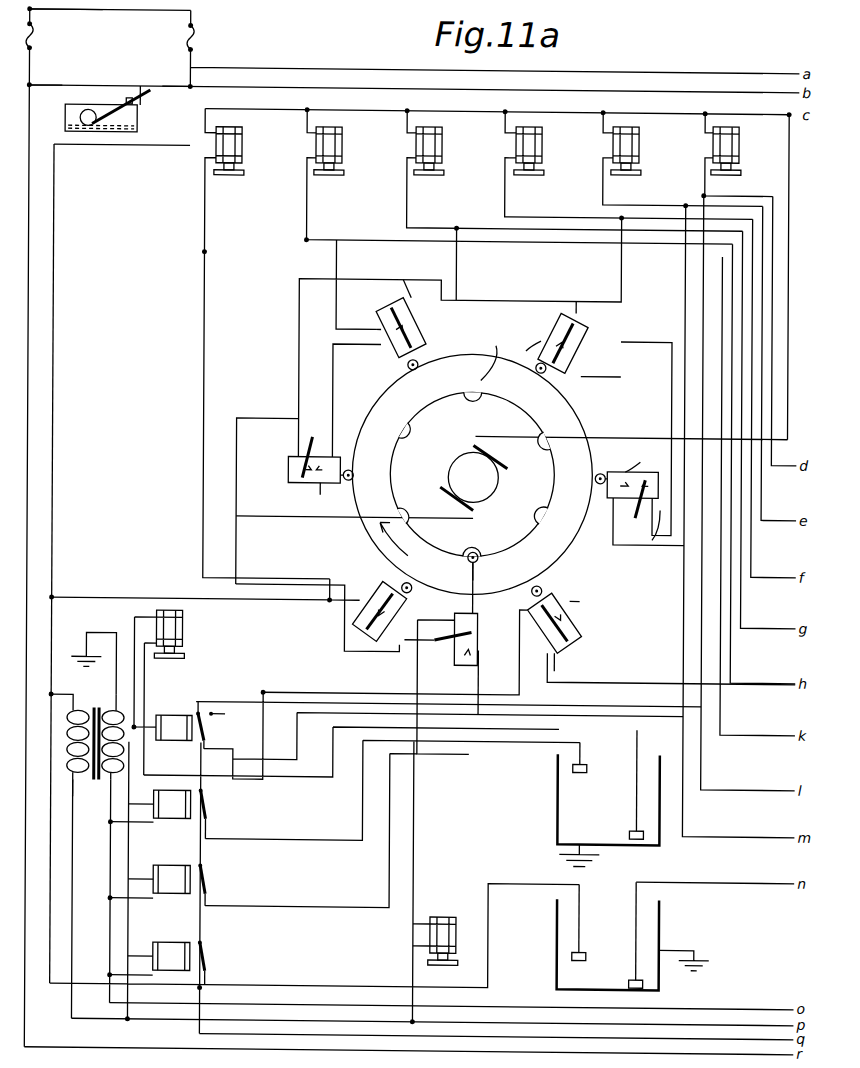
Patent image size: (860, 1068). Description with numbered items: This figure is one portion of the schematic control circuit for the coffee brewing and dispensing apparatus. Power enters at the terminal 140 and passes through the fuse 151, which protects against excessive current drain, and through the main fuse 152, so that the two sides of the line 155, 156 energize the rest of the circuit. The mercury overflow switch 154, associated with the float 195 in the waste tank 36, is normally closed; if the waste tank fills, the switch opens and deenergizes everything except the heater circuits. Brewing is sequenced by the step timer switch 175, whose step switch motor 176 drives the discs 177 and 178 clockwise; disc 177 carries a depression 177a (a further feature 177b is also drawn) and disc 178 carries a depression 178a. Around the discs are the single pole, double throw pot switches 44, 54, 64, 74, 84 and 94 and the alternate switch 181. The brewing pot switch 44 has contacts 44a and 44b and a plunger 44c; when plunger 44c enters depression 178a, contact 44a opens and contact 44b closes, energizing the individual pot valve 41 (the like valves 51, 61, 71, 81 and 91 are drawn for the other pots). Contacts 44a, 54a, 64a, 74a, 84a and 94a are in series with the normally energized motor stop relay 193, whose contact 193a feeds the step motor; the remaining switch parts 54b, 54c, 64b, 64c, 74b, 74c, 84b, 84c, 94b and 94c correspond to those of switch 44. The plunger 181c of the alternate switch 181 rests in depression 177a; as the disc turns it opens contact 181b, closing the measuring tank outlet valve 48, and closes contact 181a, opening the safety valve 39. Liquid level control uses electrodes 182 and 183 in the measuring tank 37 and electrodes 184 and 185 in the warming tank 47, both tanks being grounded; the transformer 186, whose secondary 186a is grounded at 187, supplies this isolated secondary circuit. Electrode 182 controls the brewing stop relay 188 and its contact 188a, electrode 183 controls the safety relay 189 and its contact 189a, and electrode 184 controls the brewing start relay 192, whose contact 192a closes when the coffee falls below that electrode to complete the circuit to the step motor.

The terminal 140 is at (33, 15).
The main fuse 152 is at (34, 41).
The fuse 151 is at (193, 38).
The line 156 is at (33, 84).
The line 155 is at (183, 82).
The float 195 is at (94, 105).
The waste tank 36 is at (63, 115).
The overflow switch 154 is at (146, 101).
The pot valve 41 is at (240, 150).
The relay coil 51 is at (340, 149).
The relay coil 61 is at (440, 148).
The relay coil 71 is at (540, 147).
The relay coil 81 is at (637, 146).
The relay coil 91 is at (737, 145).
The step timer switch 175 is at (590, 415).
The step switch motor 176 is at (448, 470).
The disc 177 is at (481, 353).
The depression 177a is at (478, 525).
The brush 177b is at (505, 475).
The disc 178 is at (400, 400).
The depression 178a is at (455, 580).
The pot switch 54 is at (318, 456).
The contact 54a is at (292, 446).
The roller 54b is at (345, 469).
The contact 54c is at (313, 494).
The pot switch 84 is at (630, 503).
The contact 84a is at (669, 542).
The roller 84b is at (612, 538).
The contact 84c is at (631, 459).
The pot switch 64 is at (430, 318).
The contact 64a is at (404, 288).
The roller 64b is at (417, 362).
The contact 64c is at (366, 340).
The pot switch 74 is at (585, 352).
The contact 74a is at (589, 304).
The roller 74b is at (545, 372).
The contact 74c is at (521, 337).
The brewing pot switch 44 is at (378, 610).
The contact 44a is at (317, 618).
The contact 44b is at (402, 585).
The plunger 44c is at (400, 660).
The alternate switch 181 is at (450, 639).
The contact 181a is at (448, 682).
The contact 181b is at (443, 677).
The plunger 181c is at (480, 572).
The pot switch 94 is at (545, 625).
The contact 94a is at (560, 665).
The roller 94b is at (513, 599).
The contact 94c is at (588, 601).
The ground 187 is at (77, 653).
The transformer 186 is at (92, 703).
The secondary 186a is at (92, 795).
The safety valve 39 is at (183, 631).
The motor stop relay 193 is at (182, 713).
The contact 193a is at (212, 728).
The brewing stop relay 188 is at (172, 828).
The contact 188a is at (212, 808).
The safety relay 189 is at (172, 901).
The contact 189a is at (212, 883).
The brewing start relay 192 is at (172, 941).
The contact 192a is at (212, 961).
The measuring tank 37 is at (559, 798).
The electrode 182 is at (588, 766).
The electrode 183 is at (638, 838).
The warming tank 47 is at (663, 910).
The electrode 184 is at (574, 955).
The electrode 185 is at (645, 982).
The measuring tank outlet valve 48 is at (458, 932).